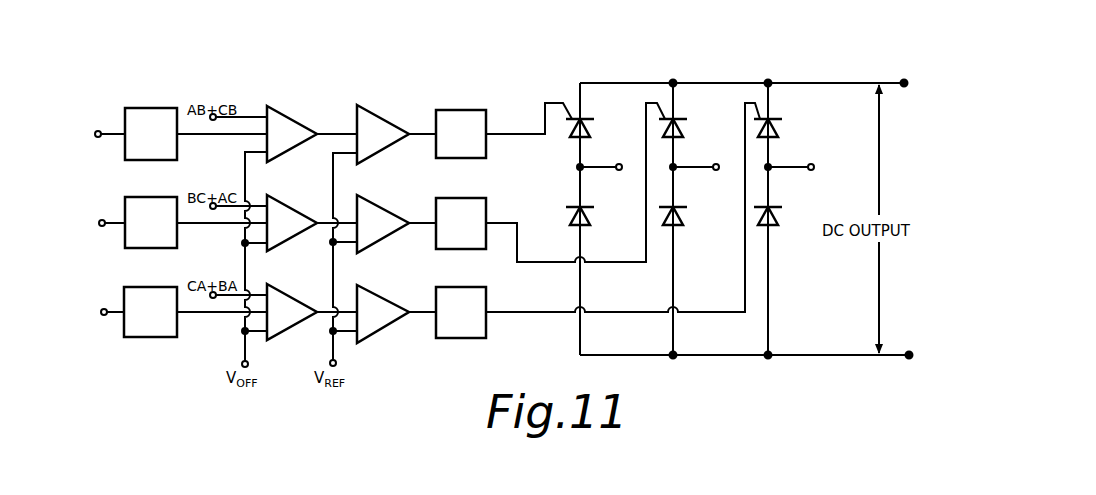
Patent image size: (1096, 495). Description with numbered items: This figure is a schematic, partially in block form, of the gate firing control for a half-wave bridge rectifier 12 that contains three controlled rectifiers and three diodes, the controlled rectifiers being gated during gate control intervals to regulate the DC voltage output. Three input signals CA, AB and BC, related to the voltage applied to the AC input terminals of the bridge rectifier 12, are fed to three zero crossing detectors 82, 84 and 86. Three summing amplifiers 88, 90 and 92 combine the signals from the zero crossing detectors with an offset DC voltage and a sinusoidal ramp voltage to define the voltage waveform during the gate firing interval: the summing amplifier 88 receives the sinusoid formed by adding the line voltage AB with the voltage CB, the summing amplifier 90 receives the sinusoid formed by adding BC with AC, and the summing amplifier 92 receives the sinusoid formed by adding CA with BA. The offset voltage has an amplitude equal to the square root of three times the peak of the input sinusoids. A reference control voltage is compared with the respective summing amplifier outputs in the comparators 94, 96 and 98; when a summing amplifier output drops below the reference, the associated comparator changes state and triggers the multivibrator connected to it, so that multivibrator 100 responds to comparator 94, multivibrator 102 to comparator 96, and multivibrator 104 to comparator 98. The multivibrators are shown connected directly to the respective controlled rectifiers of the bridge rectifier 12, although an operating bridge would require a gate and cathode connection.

The zero crossing detector 82 is at (157, 108).
The zero crossing detector 84 is at (143, 197).
The zero crossing detector 86 is at (140, 287).
The summing amplifier 88 is at (288, 106).
The summing amplifier 90 is at (287, 206).
The summing amplifier 92 is at (288, 295).
The comparator 94 is at (373, 107).
The comparator 96 is at (371, 203).
The comparator 98 is at (382, 297).
The multivibrator 100 is at (452, 110).
The multivibrator 102 is at (457, 198).
The multivibrator 104 is at (487, 302).
The bridge rectifier 12 is at (658, 66).